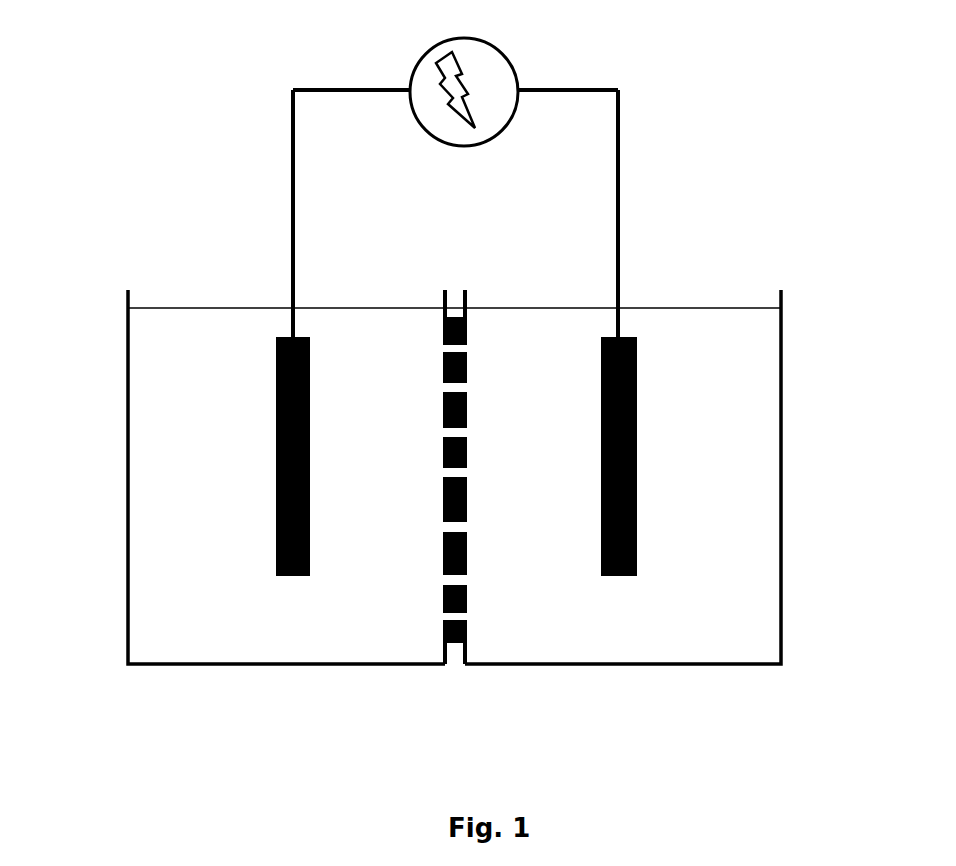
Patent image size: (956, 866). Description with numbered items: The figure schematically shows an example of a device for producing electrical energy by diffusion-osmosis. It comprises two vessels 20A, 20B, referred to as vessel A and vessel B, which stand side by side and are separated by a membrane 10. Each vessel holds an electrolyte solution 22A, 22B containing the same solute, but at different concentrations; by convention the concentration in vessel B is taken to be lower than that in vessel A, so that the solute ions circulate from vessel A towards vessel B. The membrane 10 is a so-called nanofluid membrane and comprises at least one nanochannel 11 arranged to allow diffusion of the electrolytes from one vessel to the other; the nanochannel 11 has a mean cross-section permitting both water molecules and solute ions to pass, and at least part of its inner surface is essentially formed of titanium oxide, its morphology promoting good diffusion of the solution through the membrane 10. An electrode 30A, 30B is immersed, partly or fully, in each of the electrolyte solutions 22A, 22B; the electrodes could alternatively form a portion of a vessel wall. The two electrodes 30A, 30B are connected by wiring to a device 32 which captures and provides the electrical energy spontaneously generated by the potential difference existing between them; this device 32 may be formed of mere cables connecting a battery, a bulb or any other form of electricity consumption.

The membrane 10 is at (510, 477).
The nanochannel 11 is at (469, 431).
The vessel A 20A is at (310, 668).
The vessel B 20B is at (602, 668).
The electrolyte solution 22A is at (153, 501).
The electrolyte solution 22B is at (745, 461).
The electrode 30A is at (271, 430).
The electrode 30B is at (640, 455).
The device 32 is at (515, 55).